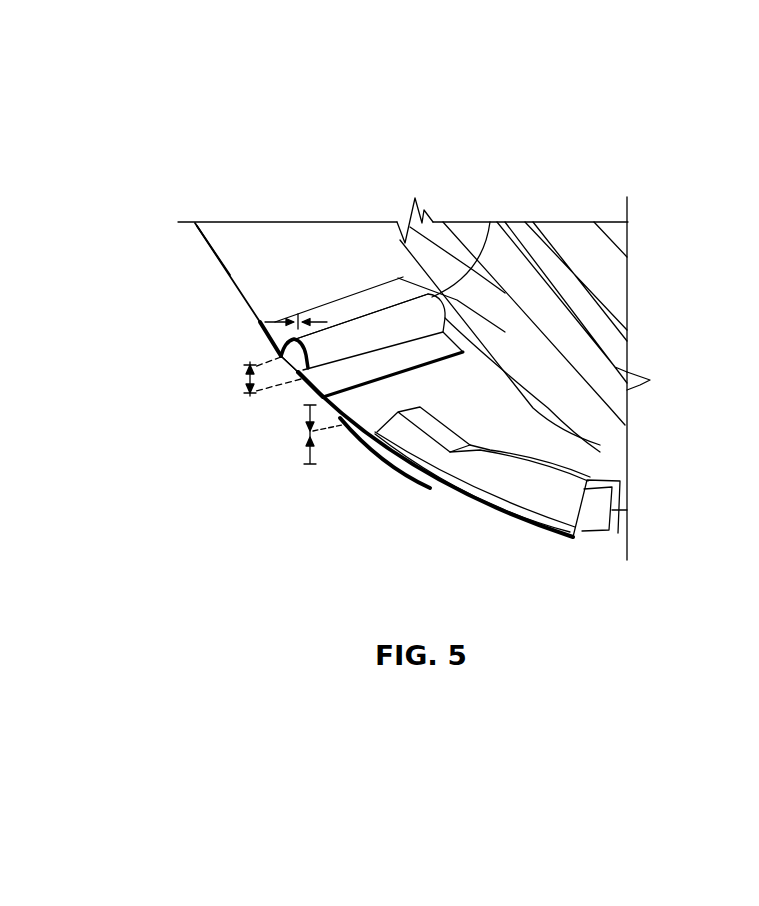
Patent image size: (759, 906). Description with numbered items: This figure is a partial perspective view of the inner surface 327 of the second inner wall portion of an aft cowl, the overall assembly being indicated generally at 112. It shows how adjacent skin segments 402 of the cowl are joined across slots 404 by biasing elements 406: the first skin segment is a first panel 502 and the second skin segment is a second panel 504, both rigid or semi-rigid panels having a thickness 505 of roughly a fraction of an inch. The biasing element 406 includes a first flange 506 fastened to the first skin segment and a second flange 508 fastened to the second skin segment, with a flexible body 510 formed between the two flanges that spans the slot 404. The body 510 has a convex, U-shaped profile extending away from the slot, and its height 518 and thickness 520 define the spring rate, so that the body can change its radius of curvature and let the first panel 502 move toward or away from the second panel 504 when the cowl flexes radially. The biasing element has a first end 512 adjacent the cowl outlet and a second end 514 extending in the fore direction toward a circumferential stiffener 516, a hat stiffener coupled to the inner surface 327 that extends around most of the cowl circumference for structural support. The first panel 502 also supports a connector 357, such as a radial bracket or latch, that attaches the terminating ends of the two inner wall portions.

The assembly 112 is at (250, 547).
The inner surface 327 is at (298, 243).
The connector 357 is at (522, 490).
The skin segments 402 is at (253, 245).
The slots 404 is at (280, 353).
The biasing elements 406 is at (347, 333).
The first panel 502 is at (400, 465).
The second panel 504 is at (205, 249).
The thickness 505 is at (307, 457).
The first flange 506 is at (305, 376).
The second flange 508 is at (313, 308).
The body 510 is at (367, 343).
The first end 512 is at (292, 364).
The second end 514 is at (490, 222).
The circumferential stiffener 516 is at (433, 233).
The height 518 is at (247, 382).
The thickness 520 is at (278, 320).